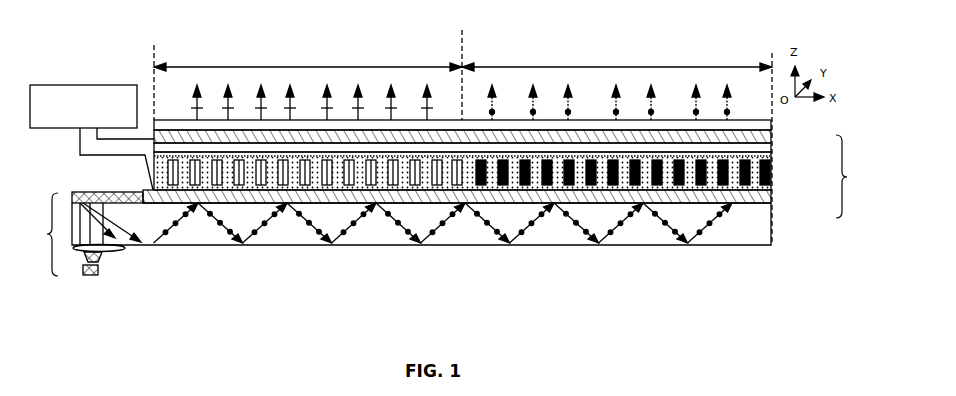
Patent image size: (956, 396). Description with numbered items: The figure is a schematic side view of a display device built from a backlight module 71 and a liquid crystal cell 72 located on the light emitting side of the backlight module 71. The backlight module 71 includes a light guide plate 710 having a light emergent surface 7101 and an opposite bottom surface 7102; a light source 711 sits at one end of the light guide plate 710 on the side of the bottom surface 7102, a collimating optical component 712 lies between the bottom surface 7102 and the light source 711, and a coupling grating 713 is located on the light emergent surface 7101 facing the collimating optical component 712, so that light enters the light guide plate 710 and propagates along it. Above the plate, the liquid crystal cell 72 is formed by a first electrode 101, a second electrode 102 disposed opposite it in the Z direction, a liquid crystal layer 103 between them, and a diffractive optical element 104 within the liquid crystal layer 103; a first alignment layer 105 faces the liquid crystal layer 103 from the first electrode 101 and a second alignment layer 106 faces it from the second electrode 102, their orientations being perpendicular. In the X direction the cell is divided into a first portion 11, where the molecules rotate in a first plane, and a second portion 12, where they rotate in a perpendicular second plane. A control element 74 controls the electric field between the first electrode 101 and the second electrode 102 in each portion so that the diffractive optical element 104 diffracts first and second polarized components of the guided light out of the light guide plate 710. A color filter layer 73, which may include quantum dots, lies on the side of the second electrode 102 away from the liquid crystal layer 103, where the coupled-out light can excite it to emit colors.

The first portion 11 is at (308, 81).
The second portion 12 is at (617, 81).
The backlight module 71 is at (93, 234).
The liquid crystal cell 72 is at (850, 176).
The color filter layer 73 is at (770, 128).
The control element 74 is at (88, 85).
The first electrode 101 is at (771, 201).
The second electrode 102 is at (771, 137).
The liquid crystal layer 103 is at (488, 145).
The diffractive optical element 104 is at (724, 168).
The first alignment layer 105 is at (771, 191).
The second alignment layer 106 is at (771, 148).
The light guide plate 710 is at (447, 244).
The light emergent surface 7101 is at (143, 192).
The bottom surface 7102 is at (293, 246).
The light source 711 is at (98, 276).
The collimating optical component 712 is at (118, 251).
The coupling grating 713 is at (105, 192).